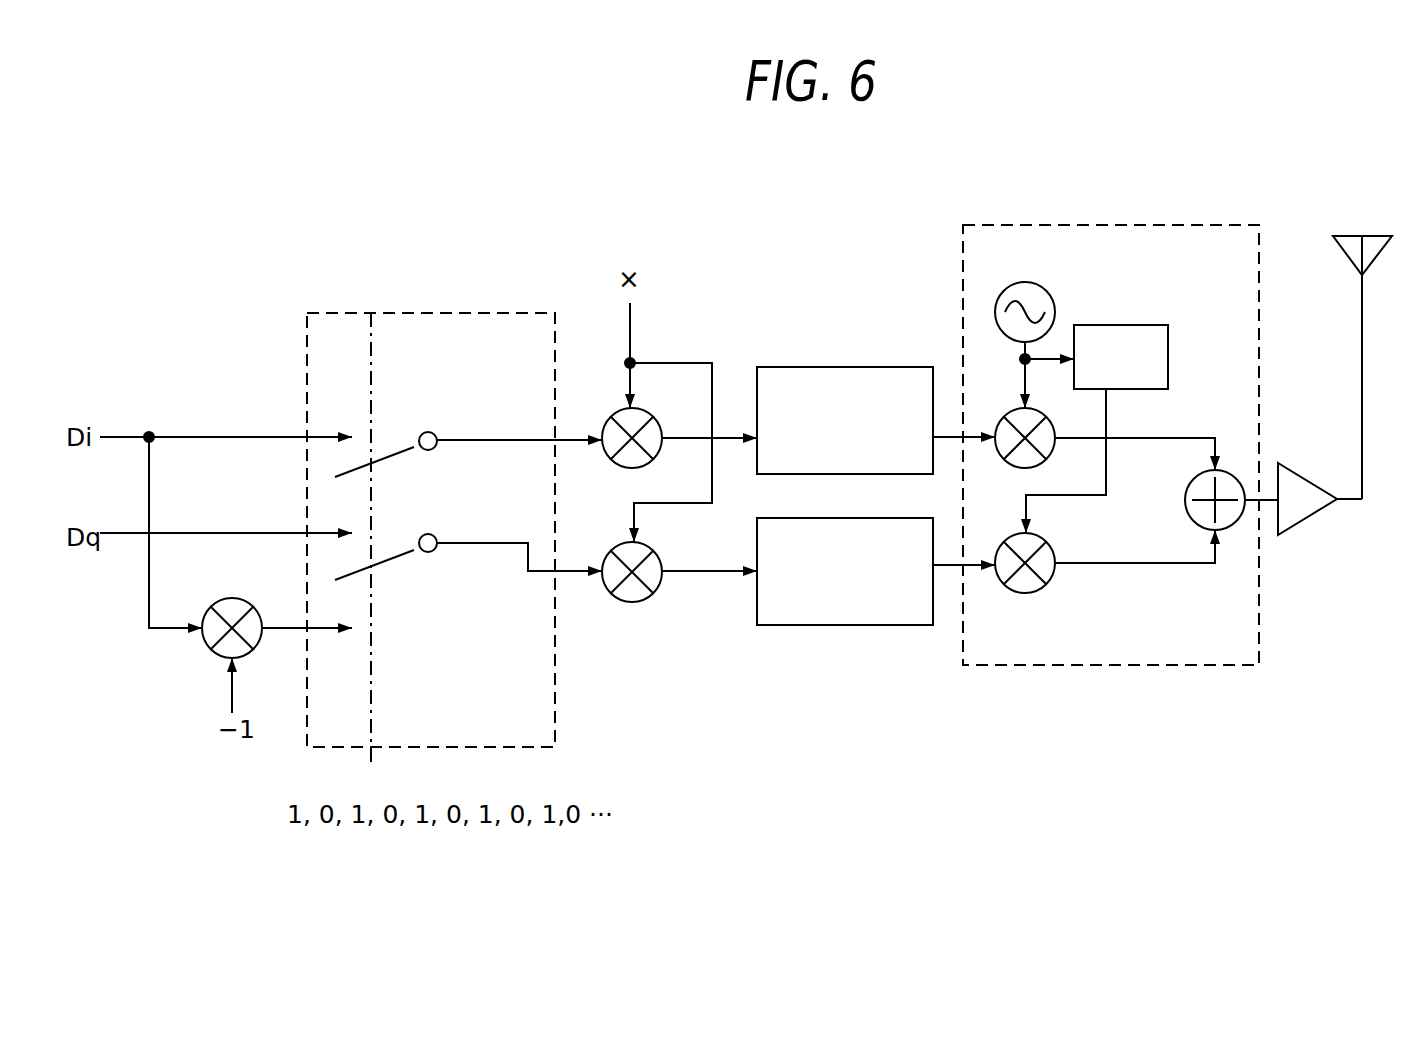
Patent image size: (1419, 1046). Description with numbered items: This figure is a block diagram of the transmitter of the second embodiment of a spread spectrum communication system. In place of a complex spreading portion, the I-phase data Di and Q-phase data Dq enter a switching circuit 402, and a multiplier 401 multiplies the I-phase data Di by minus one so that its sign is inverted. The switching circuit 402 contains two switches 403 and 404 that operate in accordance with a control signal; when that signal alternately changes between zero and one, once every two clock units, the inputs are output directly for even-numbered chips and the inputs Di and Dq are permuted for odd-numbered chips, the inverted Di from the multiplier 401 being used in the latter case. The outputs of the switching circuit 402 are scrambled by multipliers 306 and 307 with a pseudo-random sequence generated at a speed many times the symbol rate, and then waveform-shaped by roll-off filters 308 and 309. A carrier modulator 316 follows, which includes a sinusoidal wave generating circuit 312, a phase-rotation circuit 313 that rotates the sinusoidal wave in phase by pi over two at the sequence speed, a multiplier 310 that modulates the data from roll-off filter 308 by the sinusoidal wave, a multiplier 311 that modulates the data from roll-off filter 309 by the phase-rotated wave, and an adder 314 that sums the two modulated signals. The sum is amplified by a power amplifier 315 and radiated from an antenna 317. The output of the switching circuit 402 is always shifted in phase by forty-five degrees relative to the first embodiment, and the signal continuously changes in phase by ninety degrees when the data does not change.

The multiplier 306 is at (617, 418).
The multiplier 307 is at (617, 541).
The roll-off filter 308 is at (796, 367).
The roll-off filter 309 is at (845, 625).
The multiplier 310 is at (1005, 410).
The multiplier 311 is at (1014, 541).
The sinusoidal wave generating circuit 312 is at (1019, 283).
The phase-rotation circuit 313 is at (1143, 325).
The adder 314 is at (1234, 468).
The power amplifier 315 is at (1301, 477).
The carrier modulator 316 is at (1005, 665).
The antenna 317 is at (1338, 250).
The multiplier 401 is at (216, 598).
The switching circuit 402 is at (323, 313).
The switch 403 is at (408, 436).
The switch 404 is at (410, 543).